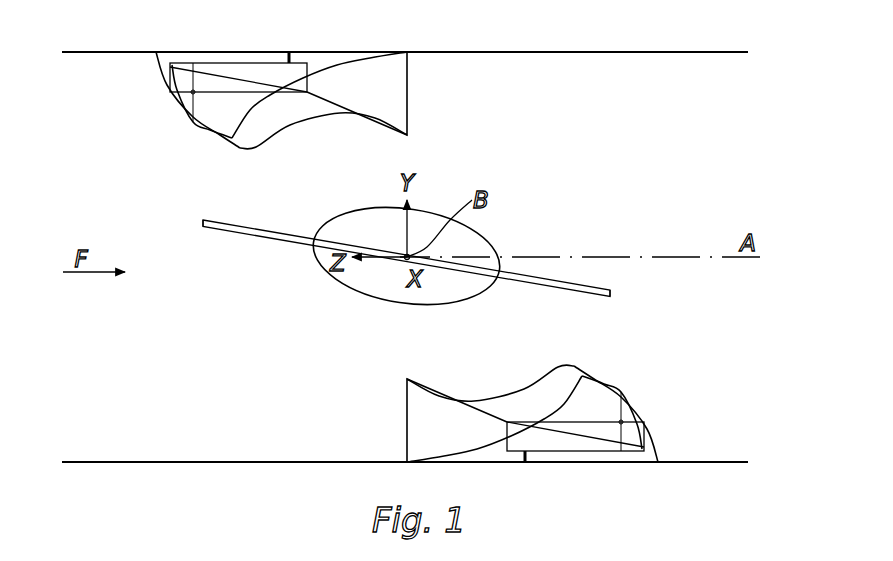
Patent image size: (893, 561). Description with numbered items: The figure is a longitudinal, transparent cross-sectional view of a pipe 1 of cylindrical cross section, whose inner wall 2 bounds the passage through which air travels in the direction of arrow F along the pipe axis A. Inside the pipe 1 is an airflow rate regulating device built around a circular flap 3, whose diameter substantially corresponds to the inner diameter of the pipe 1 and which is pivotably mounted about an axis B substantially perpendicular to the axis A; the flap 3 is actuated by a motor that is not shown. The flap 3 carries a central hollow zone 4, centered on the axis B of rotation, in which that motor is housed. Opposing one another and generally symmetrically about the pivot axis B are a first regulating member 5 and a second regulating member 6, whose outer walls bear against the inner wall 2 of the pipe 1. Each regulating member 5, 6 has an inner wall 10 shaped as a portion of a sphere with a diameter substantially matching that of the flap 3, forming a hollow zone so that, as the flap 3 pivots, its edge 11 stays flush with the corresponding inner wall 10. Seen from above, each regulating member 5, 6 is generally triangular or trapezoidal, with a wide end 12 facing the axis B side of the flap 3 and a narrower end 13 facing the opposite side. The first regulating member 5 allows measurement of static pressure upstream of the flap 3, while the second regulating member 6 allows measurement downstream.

The pipe 1 is at (462, 52).
The inner wall 2 is at (558, 55).
The circular flap 3 is at (573, 287).
The central hollow zone 4 is at (377, 278).
The first regulating member 5 is at (213, 128).
The second regulating member 6 is at (630, 413).
The inner wall 10 is at (337, 65).
The edge 11 is at (203, 220).
The wide end 12 is at (413, 100).
The narrower end 13 is at (160, 98).